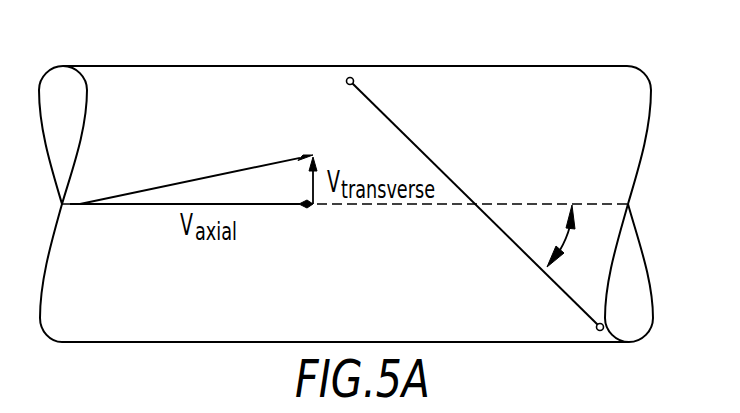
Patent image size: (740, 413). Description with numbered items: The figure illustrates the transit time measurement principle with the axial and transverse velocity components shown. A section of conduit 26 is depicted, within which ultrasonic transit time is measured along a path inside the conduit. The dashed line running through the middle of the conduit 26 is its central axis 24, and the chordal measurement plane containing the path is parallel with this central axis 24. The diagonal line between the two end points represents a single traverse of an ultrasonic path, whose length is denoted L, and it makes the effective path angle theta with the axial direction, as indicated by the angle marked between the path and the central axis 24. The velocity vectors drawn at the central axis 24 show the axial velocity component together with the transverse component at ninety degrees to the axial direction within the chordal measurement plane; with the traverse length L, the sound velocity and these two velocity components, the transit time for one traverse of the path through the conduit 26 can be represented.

The central axis 24 is at (535, 203).
The conduit 26 is at (490, 66).
The length of the traverse L is at (475, 204).